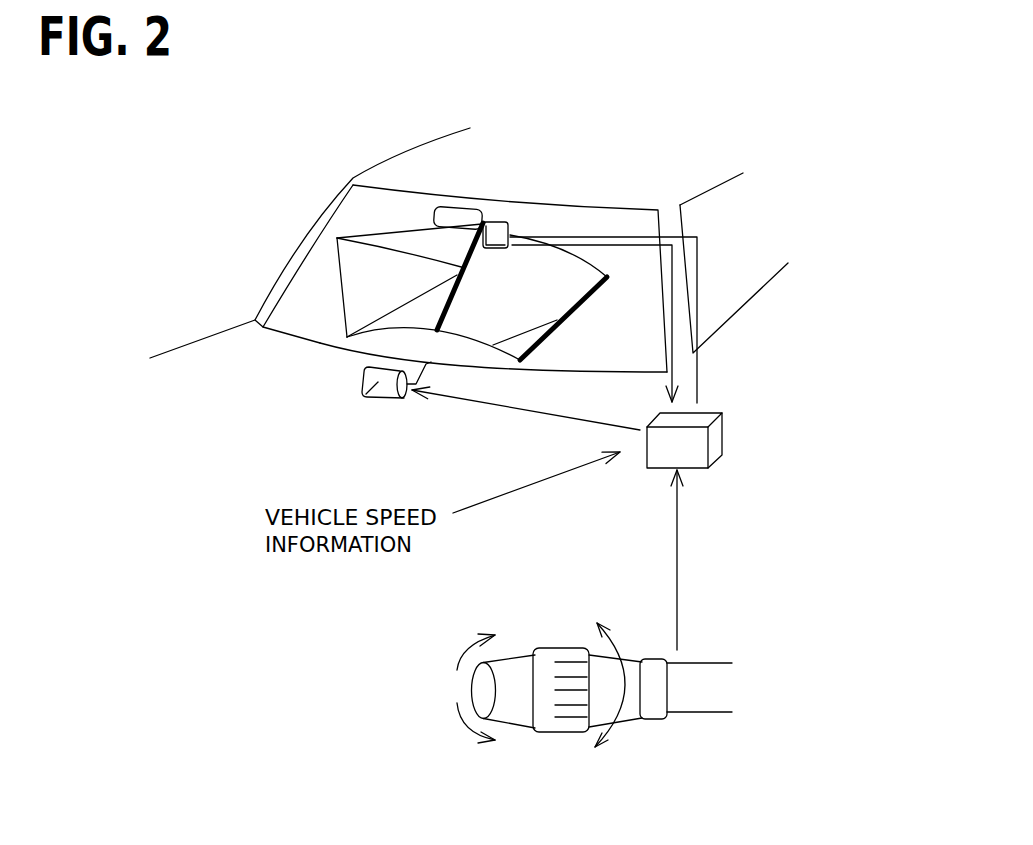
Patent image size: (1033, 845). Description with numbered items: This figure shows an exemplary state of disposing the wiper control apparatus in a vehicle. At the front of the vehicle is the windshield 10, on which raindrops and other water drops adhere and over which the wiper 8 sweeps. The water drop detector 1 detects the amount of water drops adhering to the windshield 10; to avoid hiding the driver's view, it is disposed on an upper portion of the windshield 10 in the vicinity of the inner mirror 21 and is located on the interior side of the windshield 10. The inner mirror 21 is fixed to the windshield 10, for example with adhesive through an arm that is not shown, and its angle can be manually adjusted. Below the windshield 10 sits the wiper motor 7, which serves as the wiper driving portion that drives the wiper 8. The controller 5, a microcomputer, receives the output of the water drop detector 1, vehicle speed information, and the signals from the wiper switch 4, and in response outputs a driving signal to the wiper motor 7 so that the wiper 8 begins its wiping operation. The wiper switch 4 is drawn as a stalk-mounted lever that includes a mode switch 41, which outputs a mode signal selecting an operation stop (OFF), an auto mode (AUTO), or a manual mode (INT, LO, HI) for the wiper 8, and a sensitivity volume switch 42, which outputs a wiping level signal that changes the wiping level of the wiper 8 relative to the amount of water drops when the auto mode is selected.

The water drop detector 1 is at (492, 223).
The wiper switch 4 is at (556, 685).
The controller 5 is at (713, 440).
The wiper motor 7 is at (365, 396).
The wiper 8 is at (337, 238).
The windshield 10 is at (303, 293).
The inner mirror 21 is at (458, 207).
The mode switch 41 is at (513, 722).
The sensitivity volume switch 42 is at (563, 733).